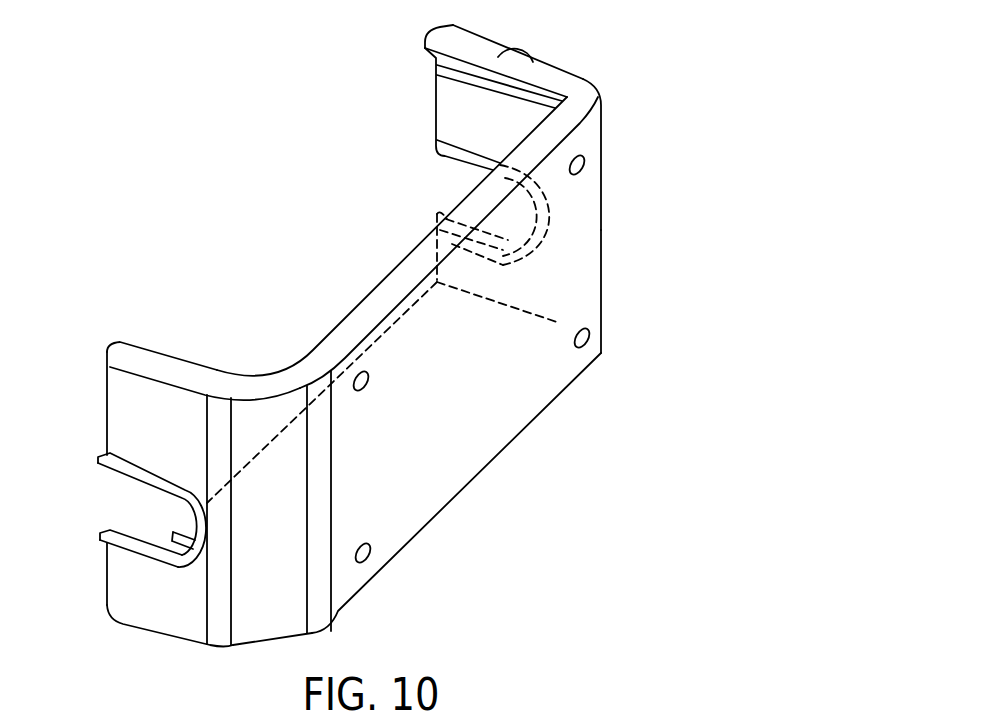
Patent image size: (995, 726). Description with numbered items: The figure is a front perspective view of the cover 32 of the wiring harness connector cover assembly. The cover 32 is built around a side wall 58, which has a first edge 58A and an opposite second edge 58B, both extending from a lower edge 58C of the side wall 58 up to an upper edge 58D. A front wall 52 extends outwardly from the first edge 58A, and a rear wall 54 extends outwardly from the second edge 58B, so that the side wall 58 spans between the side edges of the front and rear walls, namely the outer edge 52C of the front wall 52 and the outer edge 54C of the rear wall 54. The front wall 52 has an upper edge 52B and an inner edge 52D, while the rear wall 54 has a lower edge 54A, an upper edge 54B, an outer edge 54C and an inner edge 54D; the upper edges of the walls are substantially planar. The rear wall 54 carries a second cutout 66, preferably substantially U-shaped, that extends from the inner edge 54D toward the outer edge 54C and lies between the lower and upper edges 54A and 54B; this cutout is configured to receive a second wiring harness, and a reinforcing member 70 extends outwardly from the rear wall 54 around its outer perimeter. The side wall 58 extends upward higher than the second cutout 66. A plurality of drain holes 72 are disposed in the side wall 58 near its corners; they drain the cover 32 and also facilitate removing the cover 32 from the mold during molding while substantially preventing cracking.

The cover 32 is at (612, 232).
The front wall 52 is at (543, 78).
The upper edge of the front wall 52B is at (567, 83).
The outer edge of the front wall 52C is at (602, 290).
The inner edge of the front wall 52D is at (435, 111).
The rear wall 54 is at (173, 420).
The lower edge of the rear wall 54A is at (143, 627).
The upper edge of the rear wall 54B is at (143, 360).
The outer edge of the rear wall 54C is at (207, 610).
The inner edge of the rear wall 54D is at (105, 410).
The side wall 58 is at (493, 390).
The first edge of the side wall 58A is at (207, 440).
The second edge of the side wall 58B is at (602, 178).
The lower edge of the side wall 58C is at (440, 507).
The upper edge of the side wall 58D is at (381, 280).
The second cutout 66 is at (143, 532).
The reinforcing member 70 is at (147, 563).
The drain holes 72 is at (368, 389).